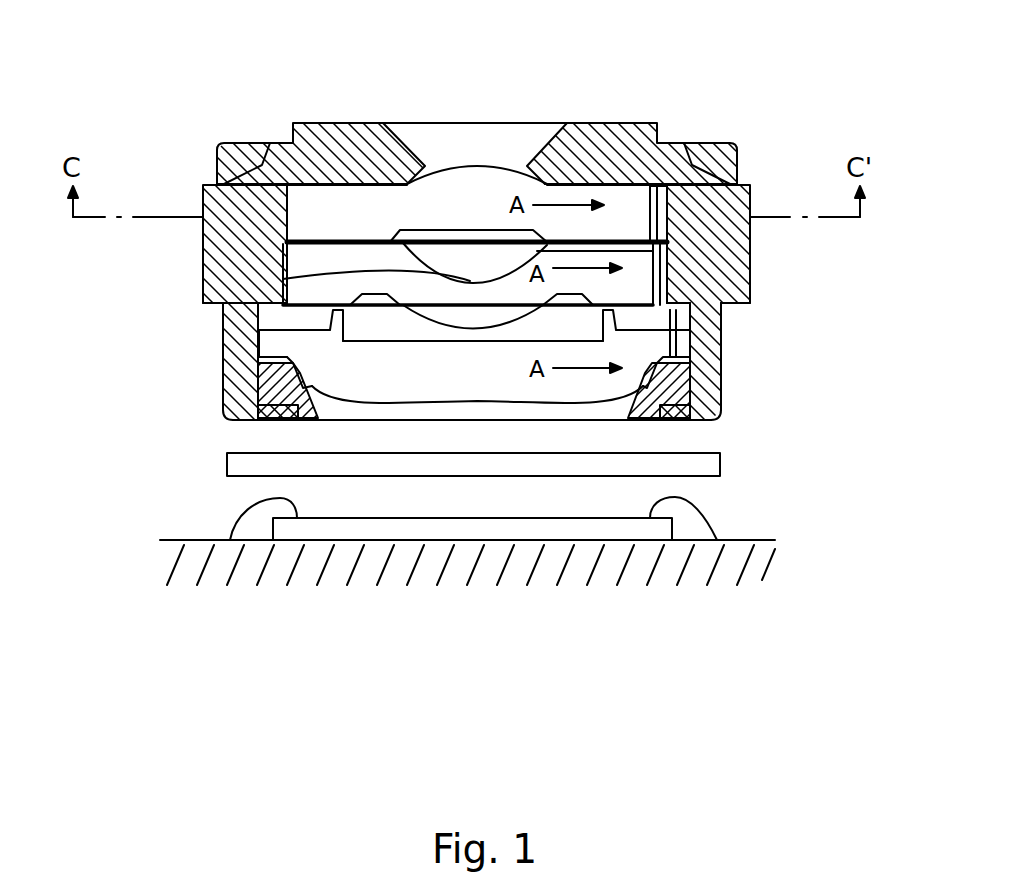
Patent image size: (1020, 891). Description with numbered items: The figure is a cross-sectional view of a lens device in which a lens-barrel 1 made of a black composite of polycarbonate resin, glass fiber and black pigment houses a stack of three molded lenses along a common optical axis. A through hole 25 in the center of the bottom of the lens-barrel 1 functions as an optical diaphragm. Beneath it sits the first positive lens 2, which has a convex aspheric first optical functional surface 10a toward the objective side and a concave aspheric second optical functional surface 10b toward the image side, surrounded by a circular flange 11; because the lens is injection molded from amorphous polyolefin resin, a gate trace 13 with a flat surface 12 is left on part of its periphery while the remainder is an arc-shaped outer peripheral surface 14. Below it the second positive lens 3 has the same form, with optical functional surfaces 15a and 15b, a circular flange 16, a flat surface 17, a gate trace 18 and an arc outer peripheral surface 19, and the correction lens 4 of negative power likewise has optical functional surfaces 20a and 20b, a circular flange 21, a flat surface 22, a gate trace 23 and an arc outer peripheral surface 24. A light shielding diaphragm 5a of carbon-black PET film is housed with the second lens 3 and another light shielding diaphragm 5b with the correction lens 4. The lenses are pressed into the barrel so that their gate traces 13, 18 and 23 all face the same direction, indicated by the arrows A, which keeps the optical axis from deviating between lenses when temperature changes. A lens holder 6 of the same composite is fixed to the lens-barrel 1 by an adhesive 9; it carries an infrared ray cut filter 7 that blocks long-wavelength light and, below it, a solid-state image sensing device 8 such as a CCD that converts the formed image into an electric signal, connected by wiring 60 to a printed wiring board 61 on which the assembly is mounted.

The lens-barrel 1 is at (750, 232).
The first positive lens 2 is at (614, 132).
The second positive lens 3 is at (703, 290).
The correction lens 4 is at (680, 337).
The light shielding diaphragm 5a is at (668, 235).
The light shielding diaphragm 5b is at (727, 330).
The lens holder 6 is at (258, 375).
The infrared ray cut filter 7 is at (712, 464).
The solid-state image sensing device 8 is at (616, 538).
The adhesive 9 is at (260, 421).
The first optical functional surface 10a is at (480, 165).
The second optical functional surface 10b is at (690, 262).
The circular flange 11 is at (326, 197).
The flat surface 12 is at (688, 178).
The gate trace 13 is at (677, 197).
The outer peripheral surface 14 is at (218, 188).
The optical functional surface 15a is at (283, 279).
The optical functional surface 15b is at (259, 333).
The circular flange 16 is at (283, 250).
The flat surface 17 is at (730, 313).
The gate trace 18 is at (693, 273).
The arc outer peripheral surface 19 is at (258, 303).
The optical functional surface 20a is at (460, 341).
The optical functional surface 20b is at (477, 401).
The circular flange 21 is at (258, 412).
The flat surface 22 is at (722, 367).
The gate trace 23 is at (727, 365).
The arc outer peripheral surface 24 is at (259, 340).
The through hole 25 is at (433, 123).
The wiring 60 is at (240, 509).
The printed wiring board 61 is at (180, 563).